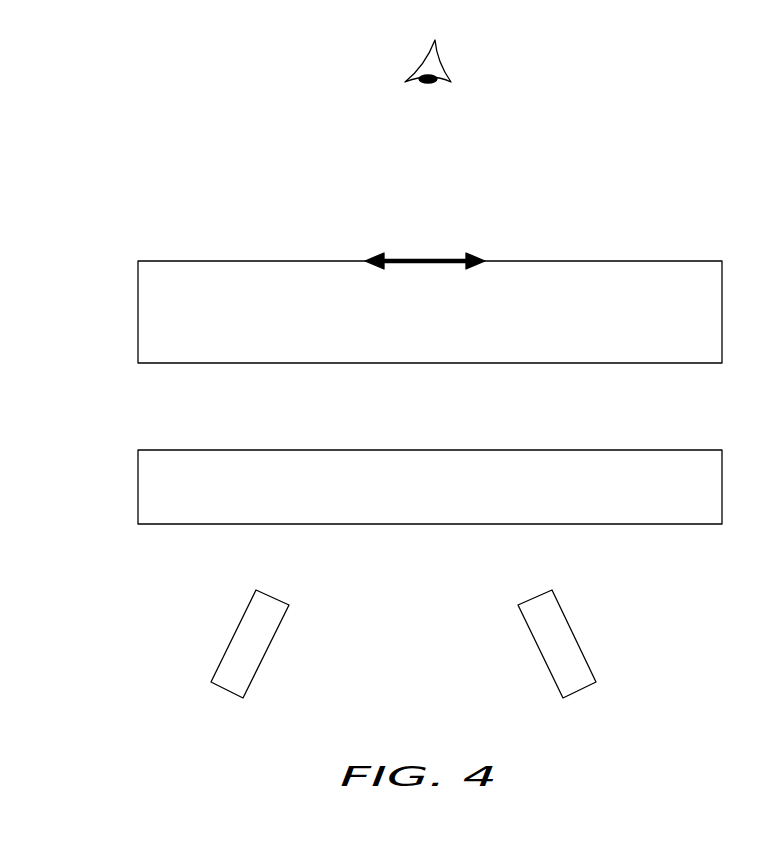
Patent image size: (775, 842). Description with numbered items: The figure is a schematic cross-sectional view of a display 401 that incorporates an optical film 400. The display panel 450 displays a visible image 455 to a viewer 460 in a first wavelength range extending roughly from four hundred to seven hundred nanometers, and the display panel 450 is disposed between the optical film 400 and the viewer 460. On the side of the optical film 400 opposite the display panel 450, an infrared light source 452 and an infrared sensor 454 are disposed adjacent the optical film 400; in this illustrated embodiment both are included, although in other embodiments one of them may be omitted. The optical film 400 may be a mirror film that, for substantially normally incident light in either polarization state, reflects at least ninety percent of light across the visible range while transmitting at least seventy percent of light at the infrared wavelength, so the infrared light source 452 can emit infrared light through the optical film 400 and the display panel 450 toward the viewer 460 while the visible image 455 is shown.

The display 401 is at (130, 117).
The viewer 460 is at (427, 66).
The visible image 455 is at (427, 258).
The display panel 450 is at (155, 311).
The optical film 400 is at (155, 484).
The infrared light source 452 is at (240, 645).
The infrared sensor 454 is at (562, 650).